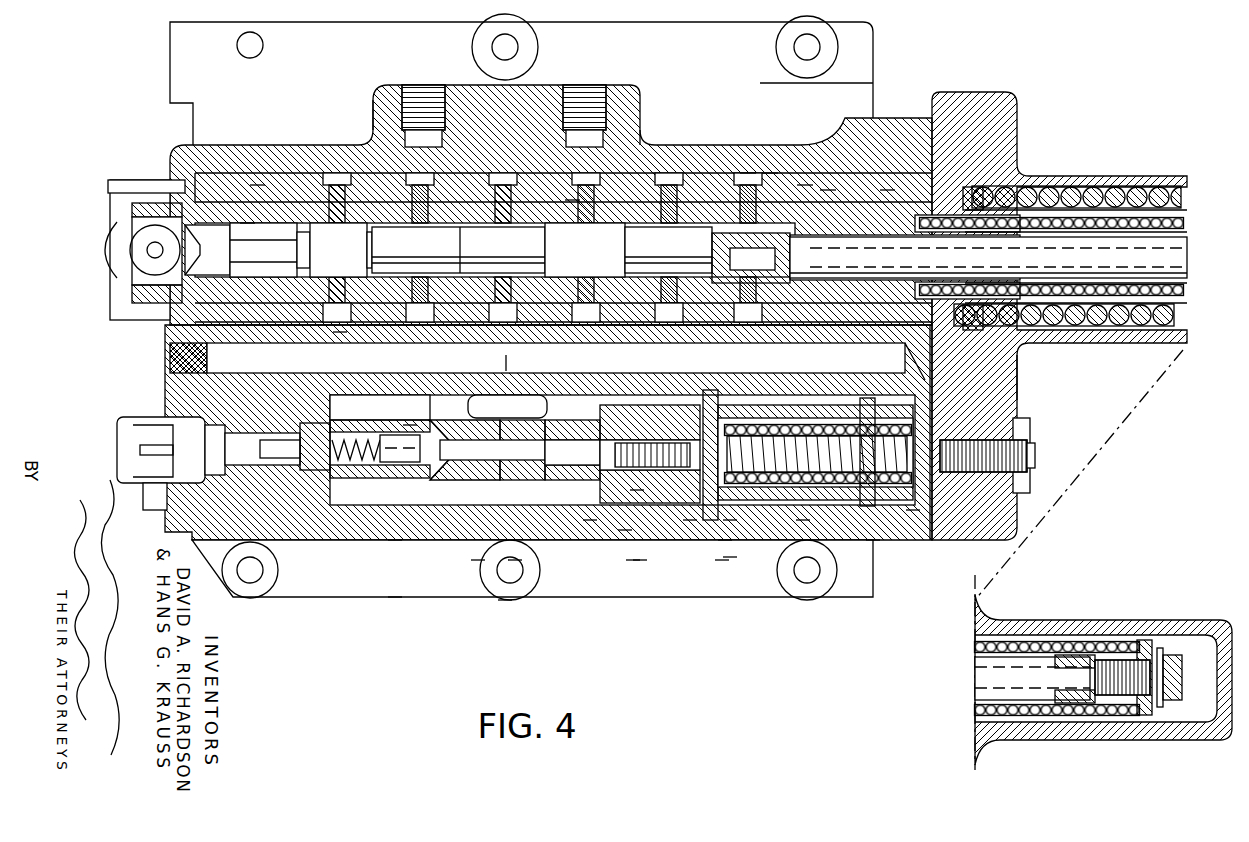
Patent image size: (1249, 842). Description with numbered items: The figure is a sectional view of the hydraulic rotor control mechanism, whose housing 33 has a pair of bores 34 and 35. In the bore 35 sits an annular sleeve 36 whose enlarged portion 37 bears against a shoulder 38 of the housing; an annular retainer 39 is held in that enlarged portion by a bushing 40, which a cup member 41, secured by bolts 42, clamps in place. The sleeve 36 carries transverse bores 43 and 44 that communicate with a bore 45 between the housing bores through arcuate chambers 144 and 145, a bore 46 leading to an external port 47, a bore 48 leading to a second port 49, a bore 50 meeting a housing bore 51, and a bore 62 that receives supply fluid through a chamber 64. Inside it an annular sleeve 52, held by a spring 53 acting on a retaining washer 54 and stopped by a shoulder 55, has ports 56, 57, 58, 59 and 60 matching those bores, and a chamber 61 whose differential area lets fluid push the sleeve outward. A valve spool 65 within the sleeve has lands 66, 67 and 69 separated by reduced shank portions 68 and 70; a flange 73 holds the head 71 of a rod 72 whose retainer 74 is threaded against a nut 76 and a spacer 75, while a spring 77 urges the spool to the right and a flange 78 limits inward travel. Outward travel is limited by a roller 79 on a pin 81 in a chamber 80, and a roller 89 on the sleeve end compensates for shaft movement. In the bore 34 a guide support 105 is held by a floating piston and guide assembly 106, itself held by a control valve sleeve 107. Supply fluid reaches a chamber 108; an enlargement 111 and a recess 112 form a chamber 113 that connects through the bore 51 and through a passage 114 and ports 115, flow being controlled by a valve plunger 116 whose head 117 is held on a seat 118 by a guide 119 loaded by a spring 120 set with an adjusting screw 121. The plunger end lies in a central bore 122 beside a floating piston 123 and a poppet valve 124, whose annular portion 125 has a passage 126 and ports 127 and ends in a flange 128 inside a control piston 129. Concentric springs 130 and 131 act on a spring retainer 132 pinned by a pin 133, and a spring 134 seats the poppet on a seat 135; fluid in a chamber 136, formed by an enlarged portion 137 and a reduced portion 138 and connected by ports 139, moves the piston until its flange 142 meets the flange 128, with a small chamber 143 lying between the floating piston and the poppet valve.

The housing 33 is at (165, 380).
The bore 34 is at (282, 548).
The bore 35 is at (180, 198).
The annular sleeve 36 is at (735, 165).
The enlarged portion 37 is at (942, 175).
The shoulder 38 is at (828, 190).
The annular retainer 39 is at (887, 190).
The bushing 40 is at (963, 193).
The cup member 41 is at (1018, 380).
The bolt 42 is at (1035, 453).
The bore 43 is at (312, 328).
The bore 44 is at (650, 183).
The bore 45 is at (167, 393).
The transverse bore 46 is at (387, 178).
The passage or port 47 is at (415, 100).
The transverse bore 48 is at (572, 200).
The passage or port 49 is at (612, 103).
The transverse bore 50 is at (500, 177).
The transverse bore 51 is at (506, 363).
The annular sleeve 52 is at (257, 190).
The spring 53 is at (1132, 325).
The retaining washer 54 is at (1150, 197).
The shoulder 55 is at (195, 178).
The port 56 is at (318, 183).
The port 57 is at (356, 175).
The port 58 is at (555, 200).
The port 59 is at (640, 140).
The port 60 is at (715, 177).
The chamber 61 is at (805, 185).
The transverse bore 62 is at (770, 165).
The chamber 64 is at (748, 170).
The valve spool 65 is at (247, 225).
The land 66 is at (338, 250).
The second land 67 is at (520, 250).
The reduced shank portion 68 is at (458, 250).
The third land 69 is at (700, 249).
The reduced shank portion 70 is at (585, 250).
The head 71 is at (790, 257).
The rod 72 is at (1060, 703).
The flange 73 is at (768, 235).
The retainer 74 is at (1150, 640).
The spacer 75 is at (1075, 657).
The nut 76 is at (1108, 697).
The spring 77 is at (1025, 640).
The flange 78 is at (233, 272).
The roller 79 is at (140, 273).
The chamber 80 is at (135, 218).
The pin 81 is at (150, 252).
The roller 89 is at (112, 250).
The guide support 105 is at (303, 598).
The floating piston and guide assembly 106 is at (457, 525).
The control valve sleeve 107 is at (873, 540).
The chamber 108 is at (363, 408).
The enlargement 111 is at (505, 600).
The recess 112 is at (462, 555).
The chamber 113 is at (507, 402).
The passage 114 is at (395, 540).
The ports 115 is at (410, 425).
The valve plunger 116 is at (395, 598).
The head 117 is at (377, 493).
The seat 118 is at (397, 500).
The guide 119 is at (362, 483).
The spring 120 is at (305, 470).
The adjusting screw 121 is at (238, 440).
The central bore 122 is at (478, 560).
The floating piston 123 is at (515, 560).
The poppet valve 124 is at (725, 540).
The annular portion 125 is at (625, 530).
The passage 126 is at (633, 560).
The ports 127 is at (640, 560).
The flange 128 is at (722, 560).
The control piston 129 is at (803, 520).
The spring 130 is at (913, 510).
The spring 131 is at (930, 433).
The spring retainer 132 is at (730, 520).
The pin 133 is at (733, 490).
The spring 134 is at (730, 557).
The seat 135 is at (690, 520).
The chamber 136 is at (612, 423).
The enlarged portion 137 is at (720, 396).
The reduced portion 138 is at (686, 470).
The ports 139 is at (630, 445).
The flange 142 is at (637, 490).
The small chamber 143 is at (590, 520).
The arcuate chamber 144 is at (340, 332).
The arcuate chamber 145 is at (812, 343).